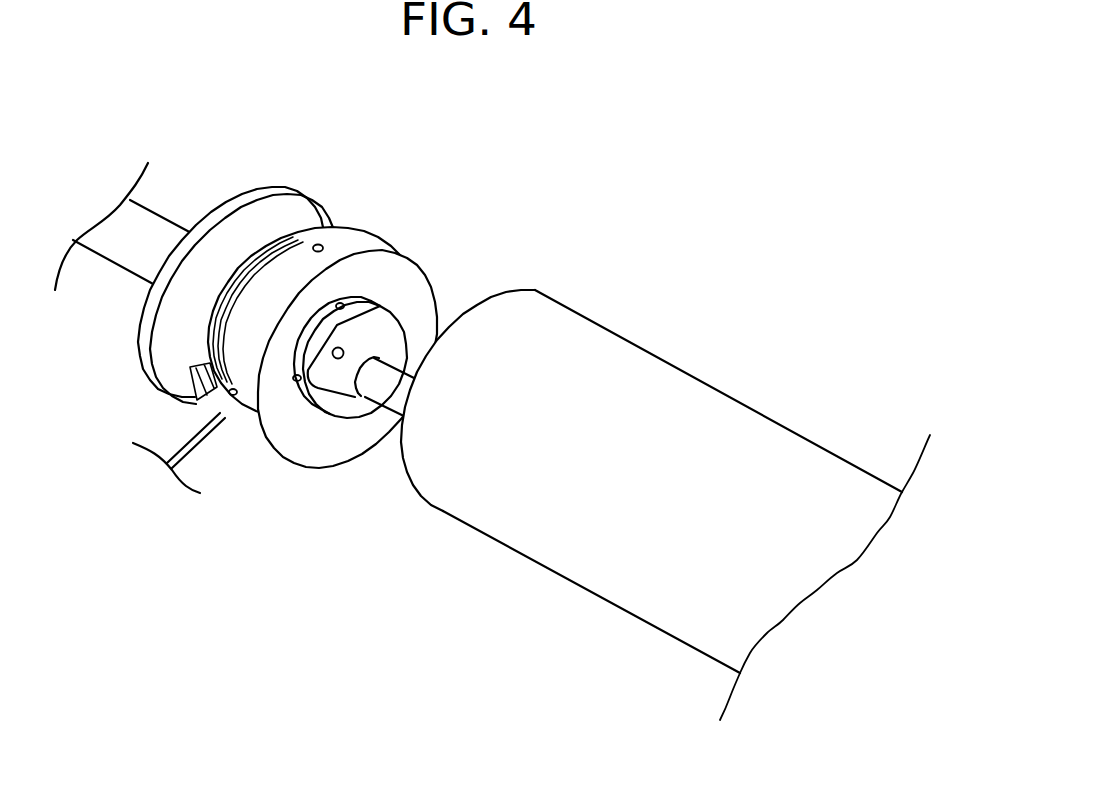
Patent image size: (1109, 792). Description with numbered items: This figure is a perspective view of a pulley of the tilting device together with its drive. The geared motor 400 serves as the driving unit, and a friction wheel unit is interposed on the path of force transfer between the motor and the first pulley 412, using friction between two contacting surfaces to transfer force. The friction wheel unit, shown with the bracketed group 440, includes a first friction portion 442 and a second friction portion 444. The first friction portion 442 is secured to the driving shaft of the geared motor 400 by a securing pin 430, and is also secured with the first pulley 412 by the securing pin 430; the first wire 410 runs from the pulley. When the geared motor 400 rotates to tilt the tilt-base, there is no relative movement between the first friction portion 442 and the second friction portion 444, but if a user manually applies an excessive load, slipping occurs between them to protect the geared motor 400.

The geared motor 400 is at (653, 375).
The first wire 410 is at (193, 447).
The first pulley 412 is at (292, 258).
The securing pin 430 is at (230, 391).
The coupling assembly 440 is at (415, 240).
The first friction portion 442 is at (405, 348).
The second friction portion 444 is at (367, 303).